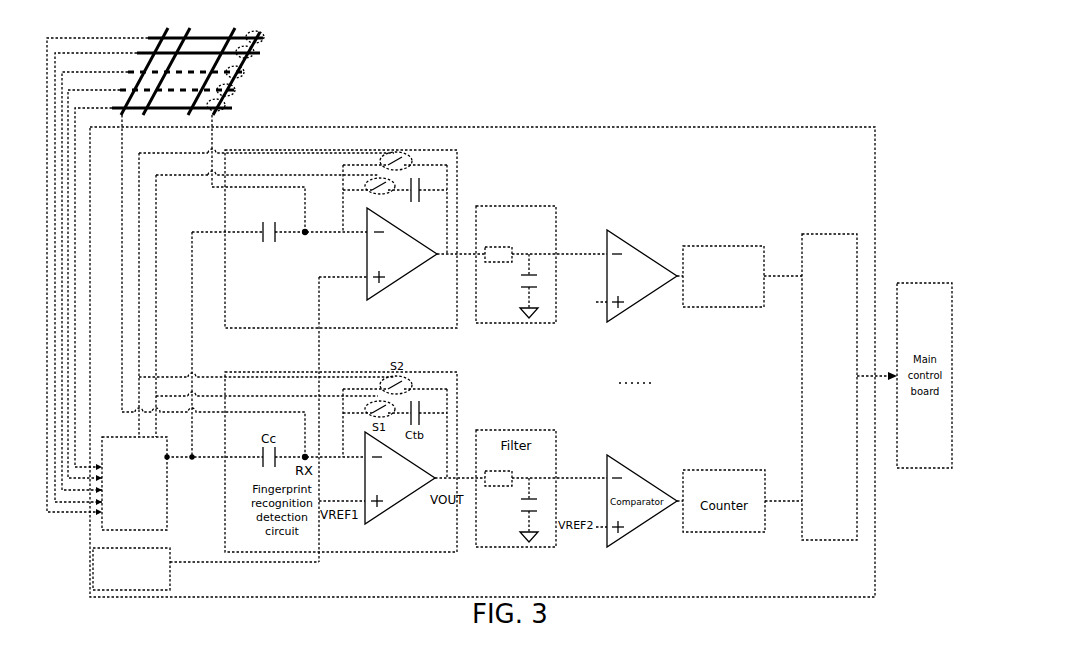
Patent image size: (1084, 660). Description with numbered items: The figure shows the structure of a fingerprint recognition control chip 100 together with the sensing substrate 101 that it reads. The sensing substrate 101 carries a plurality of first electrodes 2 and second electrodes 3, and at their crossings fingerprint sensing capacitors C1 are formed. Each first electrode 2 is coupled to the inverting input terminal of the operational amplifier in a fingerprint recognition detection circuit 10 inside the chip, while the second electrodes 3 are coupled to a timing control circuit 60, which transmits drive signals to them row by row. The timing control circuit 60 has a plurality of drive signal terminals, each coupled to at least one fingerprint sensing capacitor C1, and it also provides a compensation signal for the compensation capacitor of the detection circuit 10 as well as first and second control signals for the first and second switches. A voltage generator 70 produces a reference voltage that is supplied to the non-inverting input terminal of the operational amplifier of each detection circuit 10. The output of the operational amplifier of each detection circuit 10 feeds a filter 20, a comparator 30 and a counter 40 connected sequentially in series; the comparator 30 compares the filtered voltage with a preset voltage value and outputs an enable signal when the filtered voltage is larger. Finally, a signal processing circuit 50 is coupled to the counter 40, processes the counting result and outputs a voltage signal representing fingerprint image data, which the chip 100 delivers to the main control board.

The first electrode 2 is at (262, 36).
The second electrode 3 is at (262, 53).
The sensing substrate 101 is at (243, 71).
The fingerprint sensing capacitor C1 is at (224, 107).
The fingerprint recognition detection circuit 10 is at (425, 322).
The filter 20 is at (500, 320).
The comparator 30 is at (643, 290).
The counter 40 is at (700, 306).
The signal processing circuit 50 is at (808, 343).
The timing control circuit 60 is at (158, 527).
The voltage generator 70 is at (163, 553).
The fingerprint recognition control chip 100 is at (871, 160).